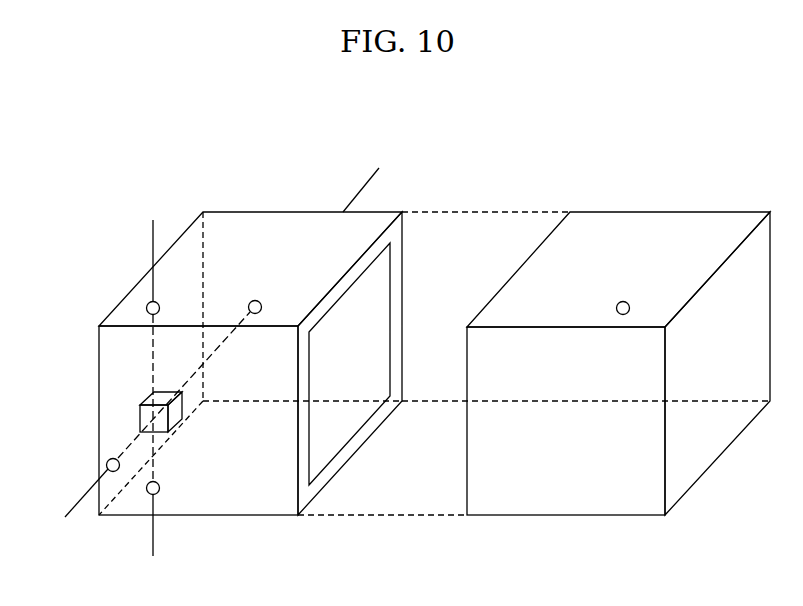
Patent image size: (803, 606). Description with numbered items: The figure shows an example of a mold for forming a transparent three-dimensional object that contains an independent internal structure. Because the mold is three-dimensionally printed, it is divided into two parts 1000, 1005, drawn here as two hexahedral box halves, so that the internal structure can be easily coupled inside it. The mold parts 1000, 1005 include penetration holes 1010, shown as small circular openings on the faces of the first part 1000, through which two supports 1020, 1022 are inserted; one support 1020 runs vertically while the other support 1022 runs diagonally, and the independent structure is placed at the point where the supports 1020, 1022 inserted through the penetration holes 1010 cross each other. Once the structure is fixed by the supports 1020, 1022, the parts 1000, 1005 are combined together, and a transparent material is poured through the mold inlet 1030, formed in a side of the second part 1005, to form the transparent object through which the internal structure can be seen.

The mold part 1000 is at (264, 212).
The mold part 1005 is at (672, 212).
The penetration holes 1010 is at (248, 310).
The support 1020 is at (151, 238).
The support 1022 is at (374, 171).
The mold inlet 1030 is at (623, 301).